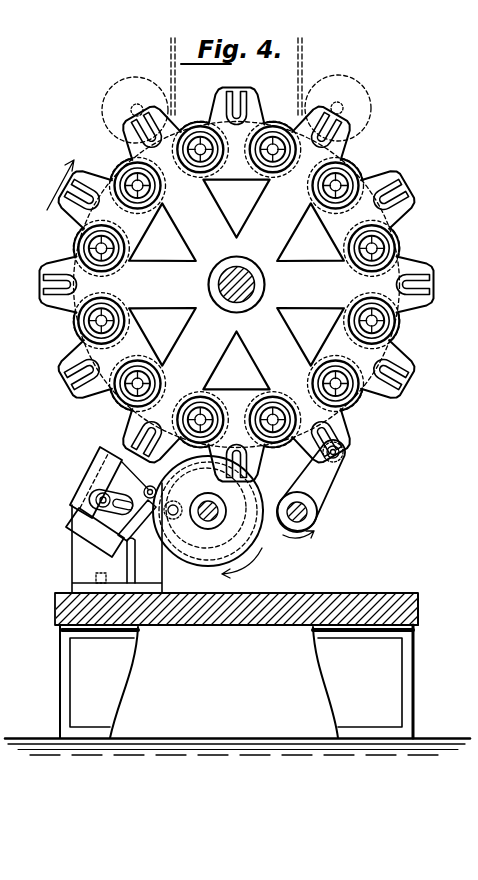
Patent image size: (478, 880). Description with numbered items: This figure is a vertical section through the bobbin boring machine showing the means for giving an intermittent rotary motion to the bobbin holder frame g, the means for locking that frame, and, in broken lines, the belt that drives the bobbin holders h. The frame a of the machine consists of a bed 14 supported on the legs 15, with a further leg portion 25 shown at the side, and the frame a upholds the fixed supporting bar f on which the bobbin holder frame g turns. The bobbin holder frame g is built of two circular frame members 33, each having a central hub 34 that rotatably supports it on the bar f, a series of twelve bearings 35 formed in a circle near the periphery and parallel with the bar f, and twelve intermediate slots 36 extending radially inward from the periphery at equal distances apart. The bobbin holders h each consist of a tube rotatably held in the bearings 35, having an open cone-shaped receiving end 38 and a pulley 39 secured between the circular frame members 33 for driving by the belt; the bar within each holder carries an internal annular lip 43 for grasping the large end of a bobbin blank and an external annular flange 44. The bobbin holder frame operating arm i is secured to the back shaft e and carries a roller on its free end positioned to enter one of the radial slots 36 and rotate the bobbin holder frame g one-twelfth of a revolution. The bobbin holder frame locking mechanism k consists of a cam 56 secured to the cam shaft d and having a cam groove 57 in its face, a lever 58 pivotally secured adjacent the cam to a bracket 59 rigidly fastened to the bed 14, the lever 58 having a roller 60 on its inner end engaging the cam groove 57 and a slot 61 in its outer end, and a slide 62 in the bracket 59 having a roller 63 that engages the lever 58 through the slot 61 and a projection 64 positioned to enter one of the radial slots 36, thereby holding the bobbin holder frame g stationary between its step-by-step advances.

The bed 14 is at (419, 614).
The legs 15 is at (410, 690).
The leg 25 is at (66, 674).
The circular frame members 33 is at (78, 356).
The central hub 34 is at (249, 266).
The bearings 35 is at (86, 250).
The intermediate slots 36 is at (82, 378).
The cone-shaped receiving end 38 is at (92, 324).
The pulley 39 is at (394, 246).
The internal annular lip 43 is at (142, 182).
The external annular flange 44 is at (126, 394).
The cam 56 is at (197, 560).
The cam groove 57 is at (258, 484).
The lever 58 is at (134, 538).
The bracket 59 is at (72, 556).
The roller 60 is at (177, 506).
The slot 61 is at (104, 475).
The slide 62 is at (68, 530).
The roller 63 is at (106, 512).
The projection 64 is at (140, 470).
The frame a is at (56, 607).
The cam shaft d is at (211, 522).
The back shaft e is at (312, 514).
The fixed supporting bar f is at (233, 283).
The bobbin holder frame g is at (397, 201).
The bobbin holders h is at (272, 135).
The bobbin holder frame operating arm i is at (321, 485).
The bobbin holder frame locking mechanism k is at (79, 502).